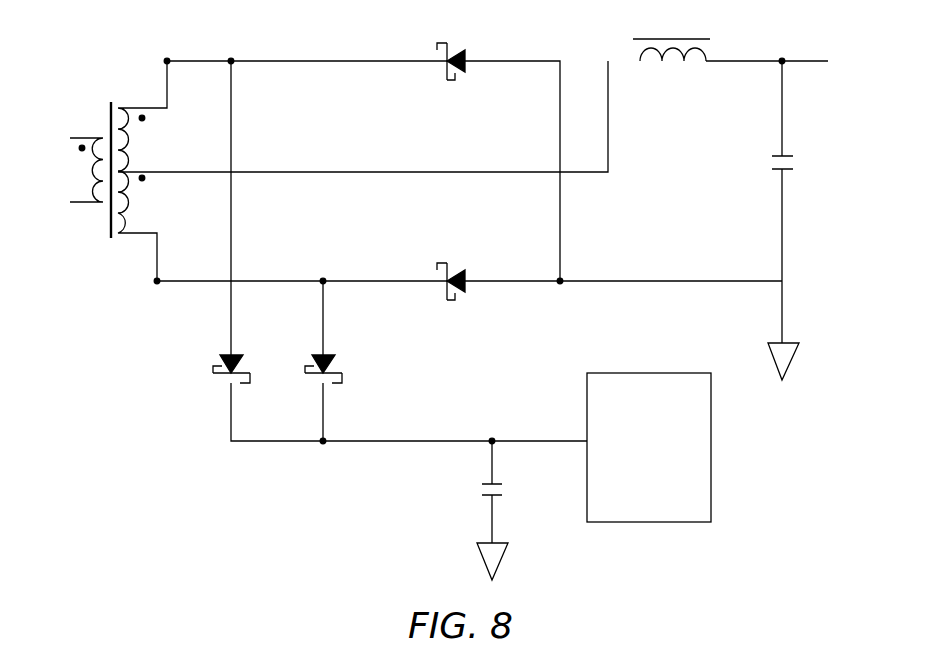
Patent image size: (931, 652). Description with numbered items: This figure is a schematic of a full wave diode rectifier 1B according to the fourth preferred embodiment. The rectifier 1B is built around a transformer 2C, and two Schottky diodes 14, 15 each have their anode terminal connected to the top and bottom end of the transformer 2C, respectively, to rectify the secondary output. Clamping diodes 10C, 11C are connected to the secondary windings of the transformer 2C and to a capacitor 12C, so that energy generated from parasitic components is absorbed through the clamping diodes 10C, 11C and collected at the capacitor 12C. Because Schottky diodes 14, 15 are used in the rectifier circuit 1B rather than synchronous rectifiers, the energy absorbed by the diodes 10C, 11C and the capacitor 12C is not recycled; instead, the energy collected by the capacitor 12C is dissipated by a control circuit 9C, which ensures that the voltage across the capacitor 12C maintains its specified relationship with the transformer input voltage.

The rectifier 1B is at (62, 66).
The transformer 2C is at (78, 228).
The Schottky diode 14 is at (432, 85).
The Schottky diode 15 is at (432, 248).
The clamping diode 10C is at (240, 347).
The clamping diode 11C is at (332, 352).
The capacitor 12C is at (475, 497).
The control circuit 9C is at (705, 480).